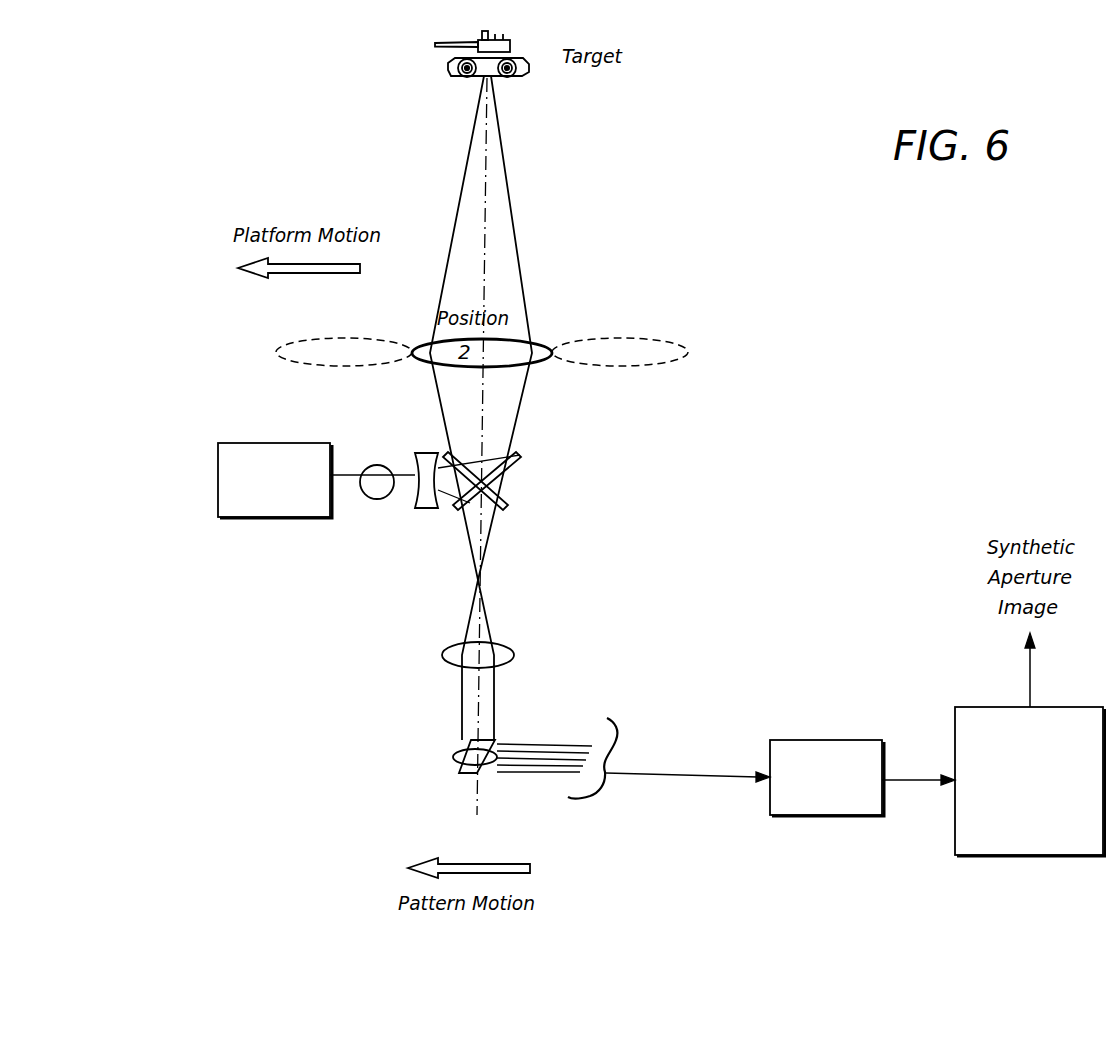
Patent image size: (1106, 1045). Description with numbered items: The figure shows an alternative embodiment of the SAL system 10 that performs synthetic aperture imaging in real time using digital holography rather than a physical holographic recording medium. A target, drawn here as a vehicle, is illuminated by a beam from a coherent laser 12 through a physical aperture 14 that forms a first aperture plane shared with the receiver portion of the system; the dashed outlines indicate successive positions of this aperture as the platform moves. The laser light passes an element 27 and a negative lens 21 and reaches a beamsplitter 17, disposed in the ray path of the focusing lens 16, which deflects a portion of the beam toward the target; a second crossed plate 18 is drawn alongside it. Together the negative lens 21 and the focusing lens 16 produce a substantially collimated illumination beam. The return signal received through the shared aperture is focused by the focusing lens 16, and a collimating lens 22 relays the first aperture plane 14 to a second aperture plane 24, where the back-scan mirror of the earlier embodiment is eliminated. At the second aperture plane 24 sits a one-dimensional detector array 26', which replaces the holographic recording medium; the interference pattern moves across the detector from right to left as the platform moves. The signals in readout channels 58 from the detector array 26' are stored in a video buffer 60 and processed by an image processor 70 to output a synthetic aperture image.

The SAL system 10 is at (620, 250).
The coherent laser 12 is at (242, 443).
The physical aperture (first aperture plane) 14 is at (714, 354).
The focusing lens 16 is at (552, 355).
The beamsplitter 17 is at (520, 455).
The beam splitter 18 is at (503, 493).
The negative lens 21 is at (437, 453).
The collimating lens 22 is at (510, 655).
The second aperture plane 24 is at (415, 755).
The one-dimensional detector array 26' is at (435, 778).
The modulator 27 is at (377, 499).
The readout channels 58 is at (532, 790).
The video buffer 60 is at (795, 740).
The image processor 70 is at (981, 707).